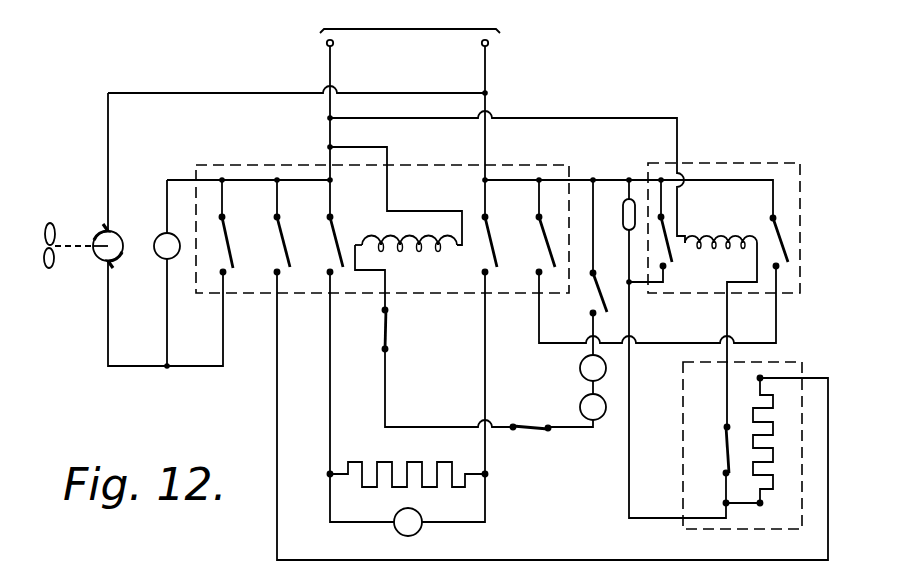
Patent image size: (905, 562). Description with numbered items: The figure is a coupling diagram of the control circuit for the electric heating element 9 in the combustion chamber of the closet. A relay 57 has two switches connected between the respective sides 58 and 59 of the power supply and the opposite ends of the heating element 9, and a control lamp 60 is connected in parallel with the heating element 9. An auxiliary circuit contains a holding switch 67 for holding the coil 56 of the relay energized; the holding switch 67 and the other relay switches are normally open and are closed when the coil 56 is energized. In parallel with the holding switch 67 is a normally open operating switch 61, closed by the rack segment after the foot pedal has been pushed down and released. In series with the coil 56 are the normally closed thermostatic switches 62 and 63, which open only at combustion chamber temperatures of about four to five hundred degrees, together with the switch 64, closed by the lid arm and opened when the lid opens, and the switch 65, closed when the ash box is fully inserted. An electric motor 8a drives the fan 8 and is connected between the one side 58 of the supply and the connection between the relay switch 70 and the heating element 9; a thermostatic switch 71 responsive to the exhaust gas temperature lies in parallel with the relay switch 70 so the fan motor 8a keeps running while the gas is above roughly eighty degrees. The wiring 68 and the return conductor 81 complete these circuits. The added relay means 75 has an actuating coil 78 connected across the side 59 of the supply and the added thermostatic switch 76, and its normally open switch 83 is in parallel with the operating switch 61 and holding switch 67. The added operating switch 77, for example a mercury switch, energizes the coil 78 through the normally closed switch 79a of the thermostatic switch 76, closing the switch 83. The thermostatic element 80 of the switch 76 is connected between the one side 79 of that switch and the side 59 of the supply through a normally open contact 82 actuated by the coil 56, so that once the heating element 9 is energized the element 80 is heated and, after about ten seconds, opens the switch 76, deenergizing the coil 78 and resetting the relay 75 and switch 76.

The fan 8 is at (99, 263).
The electric motor 8a is at (47, 270).
The electric heating element 9 is at (384, 459).
The holding coil 56 is at (395, 233).
The relay 57 is at (445, 295).
The side of power supply 58 is at (481, 47).
The side of power supply 59 is at (326, 48).
The control lamp 60 is at (395, 529).
The operating switch 61 is at (598, 301).
The thermostatic switch 62 is at (579, 369).
The thermostatic switch 63 is at (579, 408).
The switch 64 is at (529, 431).
The switch 65 is at (384, 328).
The holding switch 67 is at (334, 236).
The motor circuit 68 is at (146, 368).
The relay switch 70 is at (228, 233).
The thermostatic switch 71 is at (161, 259).
The added relay means 75 is at (758, 158).
The added thermostatic switch 76 is at (785, 359).
The added operating switch 77 is at (627, 224).
The actuating coil 78 is at (722, 236).
The side of the switch 79 is at (723, 503).
The normally closed switch 79a is at (724, 438).
The thermostatic element 80 is at (758, 463).
The return conductor 81 is at (602, 560).
The normally open contact 82 is at (283, 236).
The switch 83 is at (778, 240).